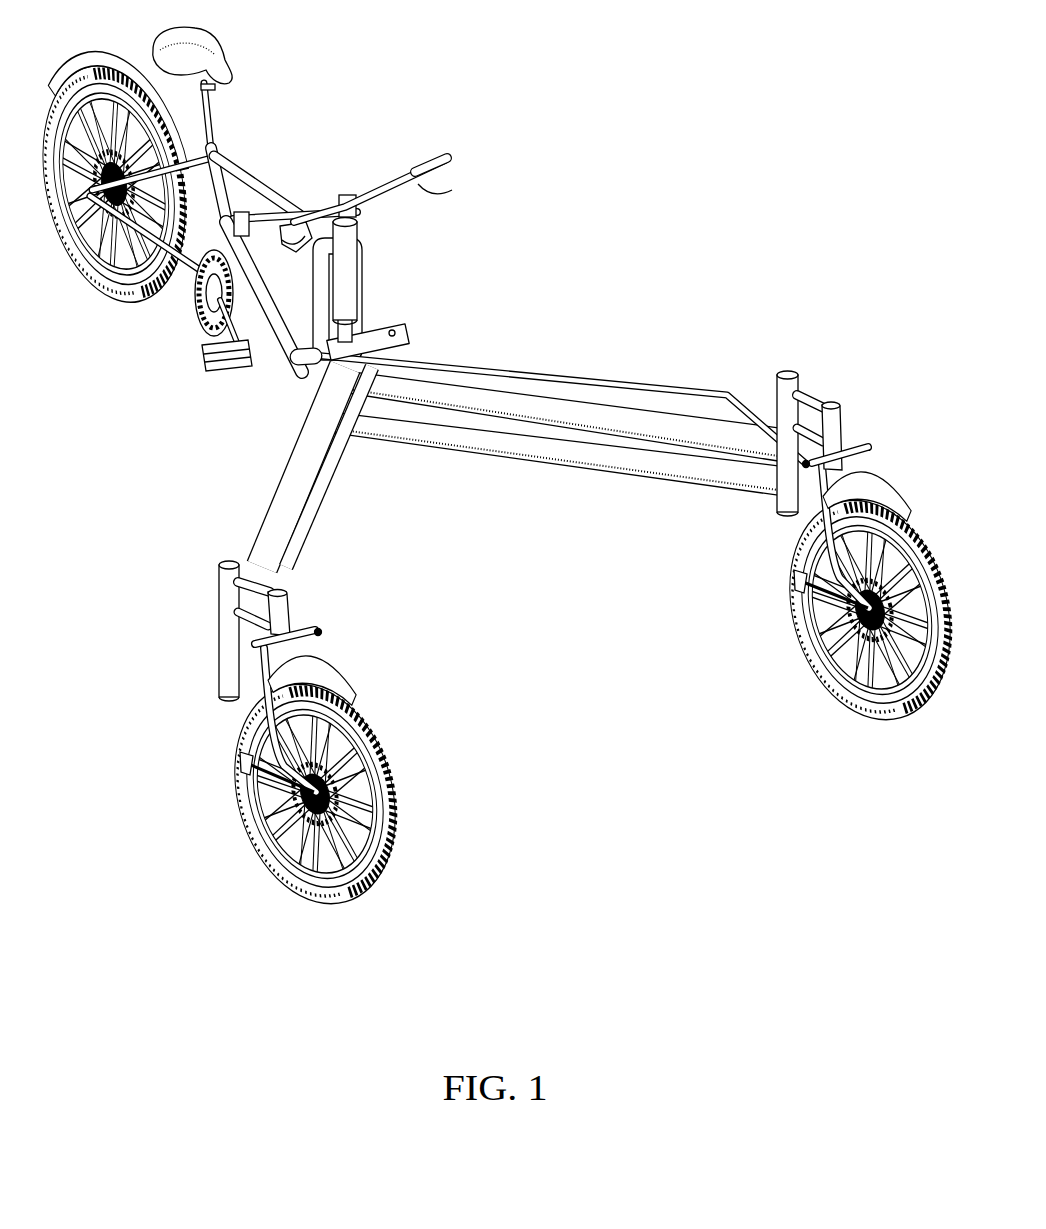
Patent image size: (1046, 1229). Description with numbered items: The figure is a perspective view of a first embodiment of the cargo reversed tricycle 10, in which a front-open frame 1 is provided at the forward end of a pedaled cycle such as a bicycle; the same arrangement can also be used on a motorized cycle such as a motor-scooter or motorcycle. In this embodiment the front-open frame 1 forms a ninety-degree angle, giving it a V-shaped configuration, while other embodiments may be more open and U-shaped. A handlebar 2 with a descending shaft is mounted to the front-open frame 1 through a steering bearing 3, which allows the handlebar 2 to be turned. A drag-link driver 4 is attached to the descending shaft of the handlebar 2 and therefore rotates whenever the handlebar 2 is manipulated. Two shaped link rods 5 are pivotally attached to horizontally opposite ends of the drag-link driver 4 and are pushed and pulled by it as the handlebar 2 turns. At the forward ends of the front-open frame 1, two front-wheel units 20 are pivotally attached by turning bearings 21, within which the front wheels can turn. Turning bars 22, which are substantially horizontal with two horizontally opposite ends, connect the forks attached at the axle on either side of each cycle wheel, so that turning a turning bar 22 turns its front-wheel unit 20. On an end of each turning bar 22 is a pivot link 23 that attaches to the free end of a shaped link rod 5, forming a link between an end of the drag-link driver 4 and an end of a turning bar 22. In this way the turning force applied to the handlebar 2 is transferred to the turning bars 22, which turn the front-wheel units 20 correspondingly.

The front-open frame 1 is at (578, 456).
The handlebar 2 is at (392, 186).
The steering bearing 3 is at (349, 261).
The drag-link driver 4 is at (373, 330).
The shaped link rod 5 is at (607, 383).
The cargo reversed tricycle 10 is at (499, 470).
The front-wheel unit 20 is at (588, 647).
The turning bearing 21 is at (283, 606).
The turning bar 22 is at (307, 628).
The pivot link 23 is at (322, 633).